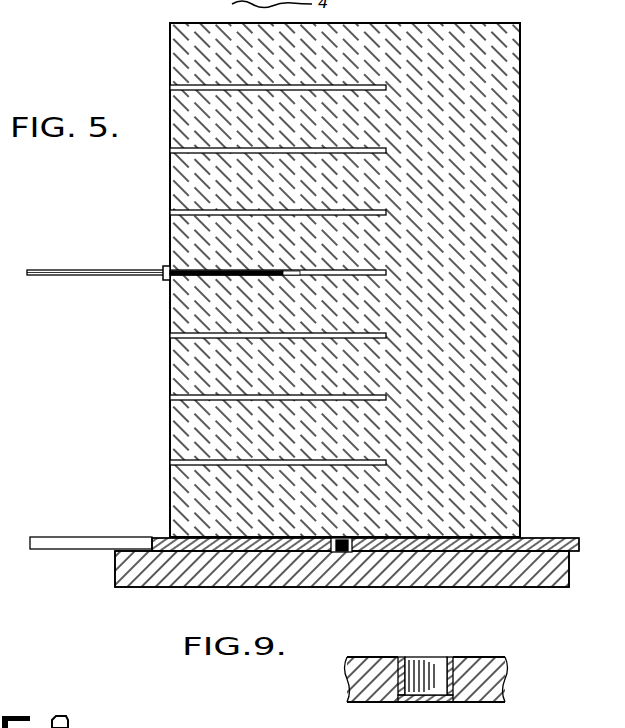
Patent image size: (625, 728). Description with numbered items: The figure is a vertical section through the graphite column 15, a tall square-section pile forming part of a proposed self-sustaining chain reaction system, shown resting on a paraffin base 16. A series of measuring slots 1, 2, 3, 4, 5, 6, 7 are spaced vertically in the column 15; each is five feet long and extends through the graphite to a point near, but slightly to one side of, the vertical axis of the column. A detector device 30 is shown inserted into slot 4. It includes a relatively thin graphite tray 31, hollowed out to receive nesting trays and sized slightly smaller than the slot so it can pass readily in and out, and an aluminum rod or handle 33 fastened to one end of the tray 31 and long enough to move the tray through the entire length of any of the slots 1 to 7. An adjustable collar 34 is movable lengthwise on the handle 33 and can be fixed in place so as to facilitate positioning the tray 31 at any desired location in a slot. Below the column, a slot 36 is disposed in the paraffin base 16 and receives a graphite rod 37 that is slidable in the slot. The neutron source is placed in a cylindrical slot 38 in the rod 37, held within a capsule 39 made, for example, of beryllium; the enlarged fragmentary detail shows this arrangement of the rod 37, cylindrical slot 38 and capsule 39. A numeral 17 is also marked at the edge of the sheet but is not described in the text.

In FIG. 5, the measuring slot 1 is at (170, 462).
In FIG. 5, the measuring slot 2 is at (170, 398).
In FIG. 5, the measuring slot 3 is at (170, 336).
In FIG. 5, the measuring slot 4 is at (185, 269).
In FIG. 5, the measuring slot 5 is at (170, 212).
In FIG. 5, the measuring slot 6 is at (170, 150).
In FIG. 5, the measuring slot 7 is at (170, 87).
In FIG. 5, the column 15 is at (522, 268).
In FIG. 5, the paraffin base 16 is at (150, 570).
In FIG. 5, the support 17 is at (9, 338).
In FIG. 5, the detector device 30 is at (68, 268).
In FIG. 5, the graphite tray 31 is at (282, 268).
In FIG. 5, the aluminum rod or handle 33 is at (92, 276).
In FIG. 5, the adjustable collar 34 is at (163, 281).
In FIG. 5, the slot 36 is at (492, 540).
In FIG. 5, the graphite rod 37 is at (72, 543).
In FIG. 9, the graphite rod 37 is at (490, 668).
In FIG. 5, the cylindrical slot 38 is at (336, 551).
In FIG. 9, the cylindrical slot 38 is at (402, 668).
In FIG. 5, the capsule 39 is at (343, 552).
In FIG. 9, the capsule 39 is at (448, 660).